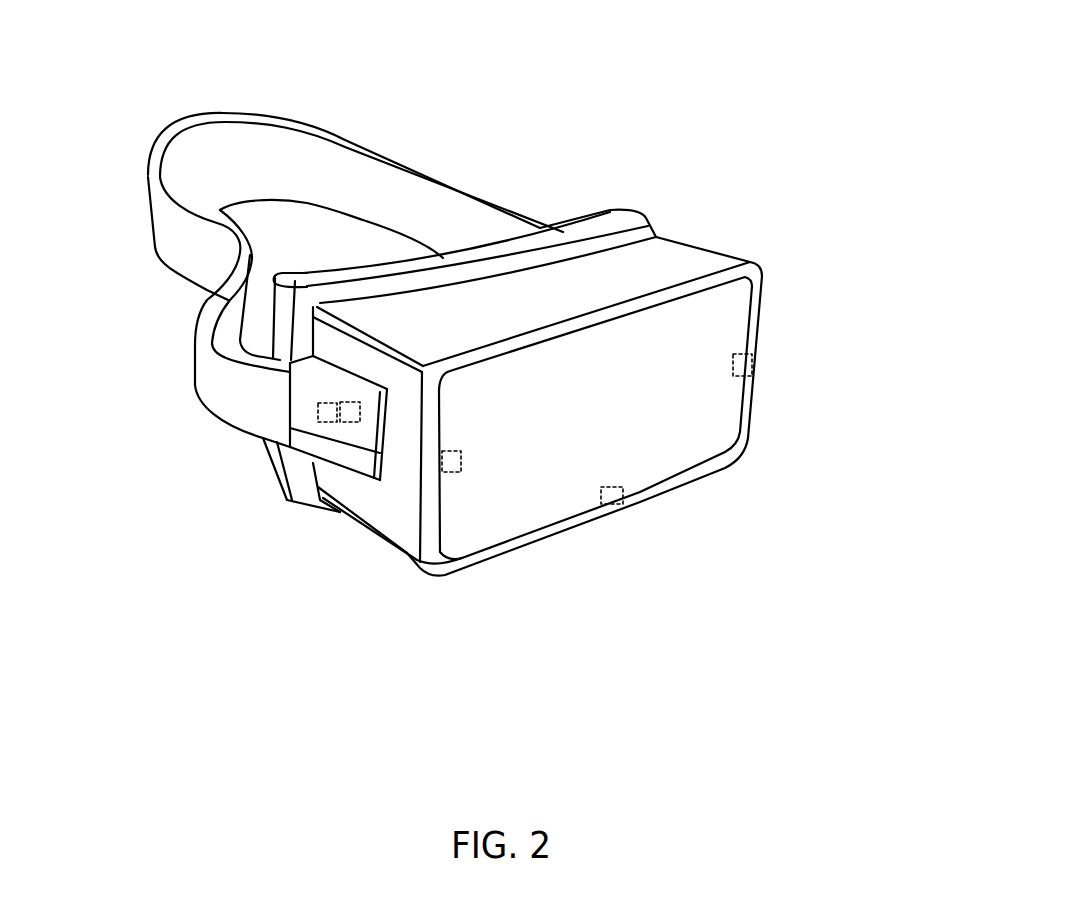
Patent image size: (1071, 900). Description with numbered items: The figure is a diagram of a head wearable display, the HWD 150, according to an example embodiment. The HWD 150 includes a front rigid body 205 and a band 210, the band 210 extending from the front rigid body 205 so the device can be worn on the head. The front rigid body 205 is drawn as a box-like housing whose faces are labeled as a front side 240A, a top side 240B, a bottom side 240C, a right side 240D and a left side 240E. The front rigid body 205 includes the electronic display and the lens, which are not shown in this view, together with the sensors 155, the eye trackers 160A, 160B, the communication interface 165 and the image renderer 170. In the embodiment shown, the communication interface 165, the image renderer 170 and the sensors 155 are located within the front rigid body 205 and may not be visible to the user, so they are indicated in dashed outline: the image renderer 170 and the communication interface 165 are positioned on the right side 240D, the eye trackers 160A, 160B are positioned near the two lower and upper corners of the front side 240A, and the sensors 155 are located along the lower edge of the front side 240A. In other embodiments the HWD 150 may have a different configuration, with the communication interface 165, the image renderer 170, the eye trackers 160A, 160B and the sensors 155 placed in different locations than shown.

The HWD 150 is at (74, 56).
The band 210 is at (462, 182).
The front rigid body 205 is at (510, 399).
The front side 240A is at (674, 446).
The top side 240B is at (393, 311).
The bottom side 240C is at (311, 557).
The right side 240D is at (396, 503).
The left side 240E is at (728, 248).
The sensors 155 is at (614, 506).
The eye tracker 160A is at (451, 474).
The eye tracker 160B is at (758, 369).
The image renderer 170 is at (316, 412).
The communication interface 165 is at (348, 425).